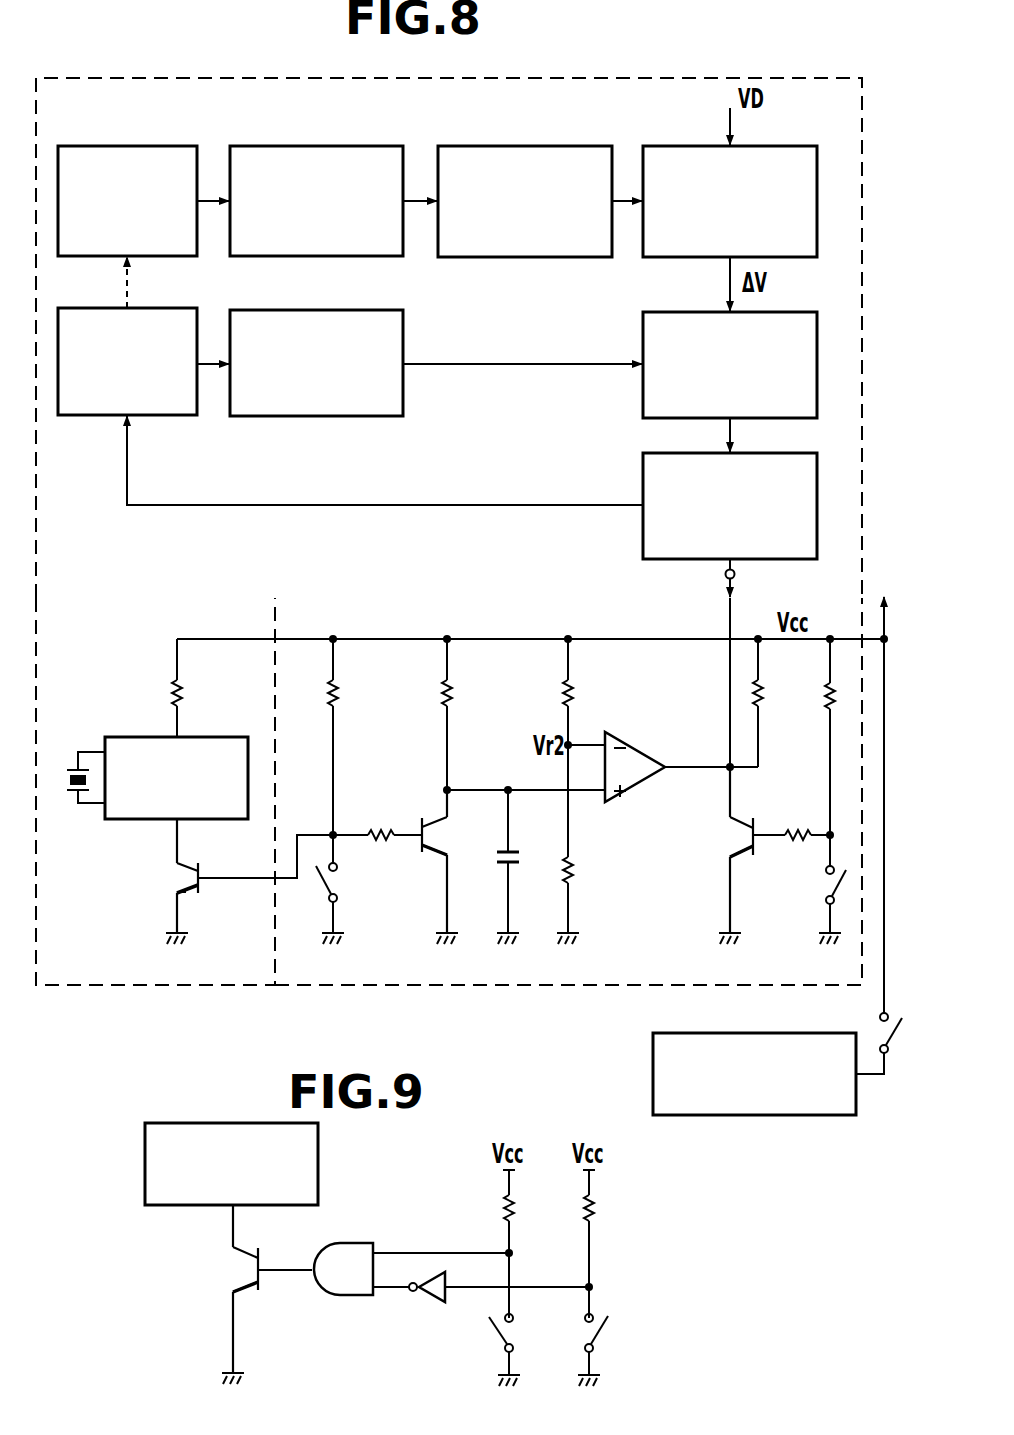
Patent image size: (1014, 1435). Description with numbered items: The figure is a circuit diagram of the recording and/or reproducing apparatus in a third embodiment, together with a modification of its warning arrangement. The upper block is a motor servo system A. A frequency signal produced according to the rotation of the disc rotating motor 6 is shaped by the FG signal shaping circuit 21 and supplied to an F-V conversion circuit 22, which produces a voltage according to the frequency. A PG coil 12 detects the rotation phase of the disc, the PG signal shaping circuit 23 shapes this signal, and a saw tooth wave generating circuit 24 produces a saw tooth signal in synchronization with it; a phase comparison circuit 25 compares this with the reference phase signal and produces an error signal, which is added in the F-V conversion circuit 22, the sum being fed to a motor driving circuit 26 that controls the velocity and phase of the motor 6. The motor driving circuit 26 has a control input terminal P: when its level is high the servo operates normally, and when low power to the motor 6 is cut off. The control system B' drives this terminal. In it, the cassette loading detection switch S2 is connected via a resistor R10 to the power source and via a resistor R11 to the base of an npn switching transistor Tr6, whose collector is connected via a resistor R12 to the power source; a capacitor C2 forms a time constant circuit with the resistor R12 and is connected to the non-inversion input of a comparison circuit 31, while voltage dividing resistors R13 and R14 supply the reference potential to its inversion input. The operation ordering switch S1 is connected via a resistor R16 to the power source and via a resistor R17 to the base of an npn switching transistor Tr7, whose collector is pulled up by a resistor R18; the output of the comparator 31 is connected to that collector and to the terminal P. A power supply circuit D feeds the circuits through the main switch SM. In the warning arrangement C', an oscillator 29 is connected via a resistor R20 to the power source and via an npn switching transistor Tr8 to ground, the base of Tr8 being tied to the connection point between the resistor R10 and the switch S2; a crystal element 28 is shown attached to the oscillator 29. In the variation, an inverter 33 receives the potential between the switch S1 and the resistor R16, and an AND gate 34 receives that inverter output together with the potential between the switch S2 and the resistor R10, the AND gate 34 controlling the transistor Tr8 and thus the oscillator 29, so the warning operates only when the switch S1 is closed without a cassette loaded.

In FIG. 8, the PG coil 12 is at (157, 146).
In FIG. 8, the PG signal shaping circuit 23 is at (353, 146).
In FIG. 8, the saw tooth wave generating circuit 24 is at (553, 146).
In FIG. 8, the phase comparison circuit 25 is at (775, 146).
In FIG. 8, the disc rotating motor 6 is at (93, 415).
In FIG. 8, the FG signal shaping circuit 21 is at (343, 416).
In FIG. 8, the F-V conversion circuit 22 is at (660, 312).
In FIG. 8, the motor driving circuit 26 is at (660, 453).
In FIG. 8, the motor servo system A is at (755, 78).
In FIG. 8, the control system B' is at (568, 830).
In FIG. 8, the warning arrangement C' is at (155, 830).
In FIG. 8, the power supply circuit D is at (653, 1066).
In FIG. 8, the control input terminal P is at (740, 665).
In FIG. 8, the oscillator 29 is at (200, 737).
In FIG. 9, the oscillator 29 is at (318, 1155).
In FIG. 8, the crystal resonator 28 is at (70, 782).
In FIG. 8, the resistor R20 is at (170, 693).
In FIG. 8, the npn switching transistor Tr8 is at (190, 880).
In FIG. 9, the npn switching transistor Tr8 is at (250, 1268).
In FIG. 8, the resistor R10 is at (328, 690).
In FIG. 9, the resistor R10 is at (504, 1207).
In FIG. 8, the resistor R11 is at (381, 830).
In FIG. 8, the resistor R12 is at (442, 694).
In FIG. 8, the voltage dividing resistor R13 is at (564, 694).
In FIG. 8, the voltage dividing resistor R14 is at (576, 870).
In FIG. 8, the resistor R16 is at (828, 703).
In FIG. 9, the resistor R16 is at (596, 1208).
In FIG. 8, the resistor R17 is at (796, 842).
In FIG. 8, the pull-up resistor R18 is at (764, 698).
In FIG. 8, the npn switching transistor Tr6 is at (454, 838).
In FIG. 8, the npn switching transistor Tr7 is at (746, 836).
In FIG. 8, the capacitor C2 is at (520, 857).
In FIG. 8, the operation ordering switch S1 is at (826, 883).
In FIG. 9, the operation ordering switch S1 is at (598, 1330).
In FIG. 8, the cassette loading detection switch S2 is at (340, 877).
In FIG. 9, the cassette loading detection switch S2 is at (514, 1330).
In FIG. 8, the comparison circuit 31 is at (633, 738).
In FIG. 8, the main switch SM is at (878, 1030).
In FIG. 9, the inverter 33 is at (436, 1302).
In FIG. 9, the AND gate 34 is at (347, 1295).